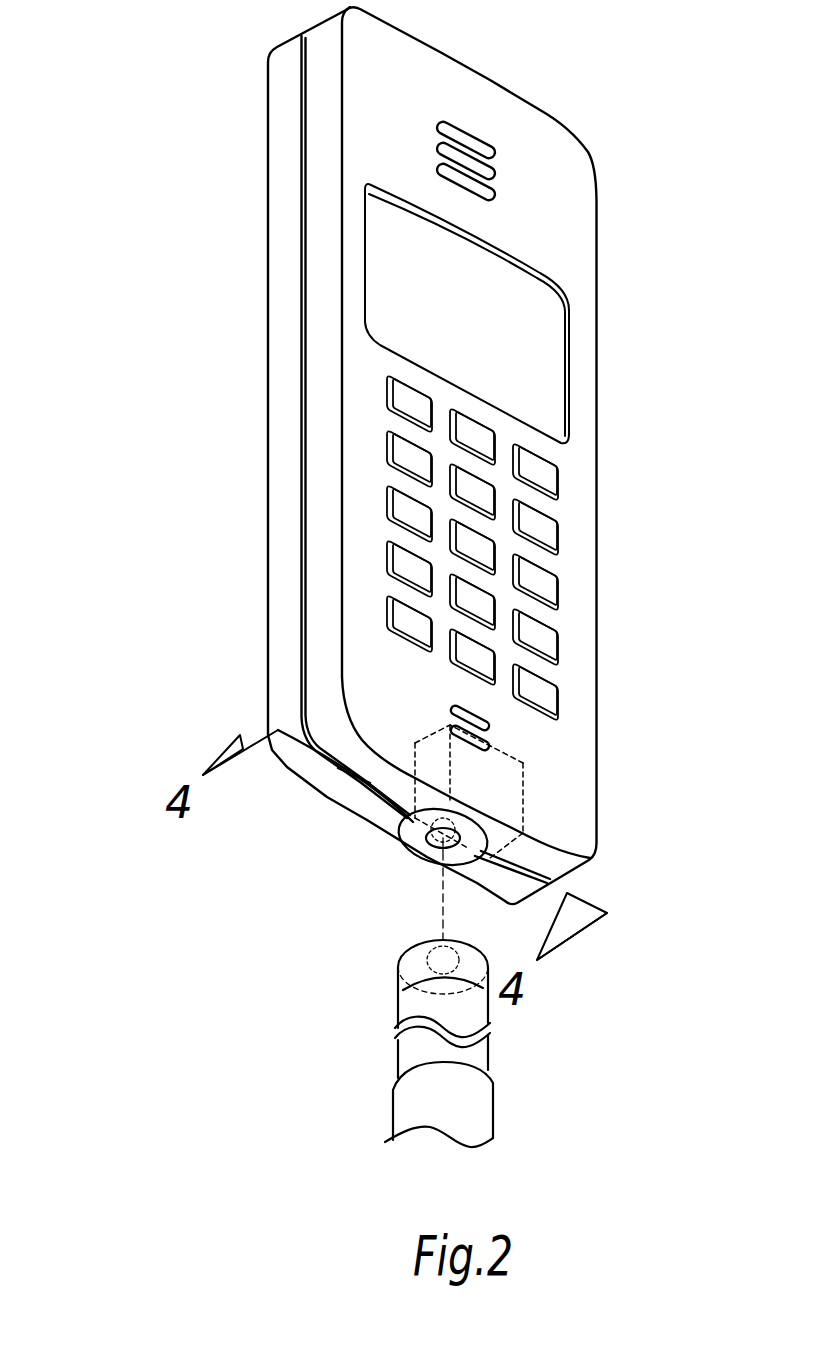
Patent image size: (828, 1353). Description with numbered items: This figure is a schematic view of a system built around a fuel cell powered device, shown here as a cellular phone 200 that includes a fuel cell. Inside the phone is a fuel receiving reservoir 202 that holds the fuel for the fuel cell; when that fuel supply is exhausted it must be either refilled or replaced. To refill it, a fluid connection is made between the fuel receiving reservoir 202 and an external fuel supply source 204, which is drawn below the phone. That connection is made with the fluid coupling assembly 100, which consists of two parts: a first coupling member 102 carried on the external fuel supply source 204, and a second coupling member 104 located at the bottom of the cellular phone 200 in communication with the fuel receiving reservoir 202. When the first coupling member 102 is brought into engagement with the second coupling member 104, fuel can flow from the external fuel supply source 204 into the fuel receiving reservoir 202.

The fluid coupling assembly 100 is at (193, 863).
The first coupling member 102 is at (398, 966).
The second coupling member 104 is at (410, 850).
The cellular phone 200 is at (583, 173).
The fuel receiving reservoir 202 is at (523, 793).
The external fuel supply source 204 is at (493, 1120).